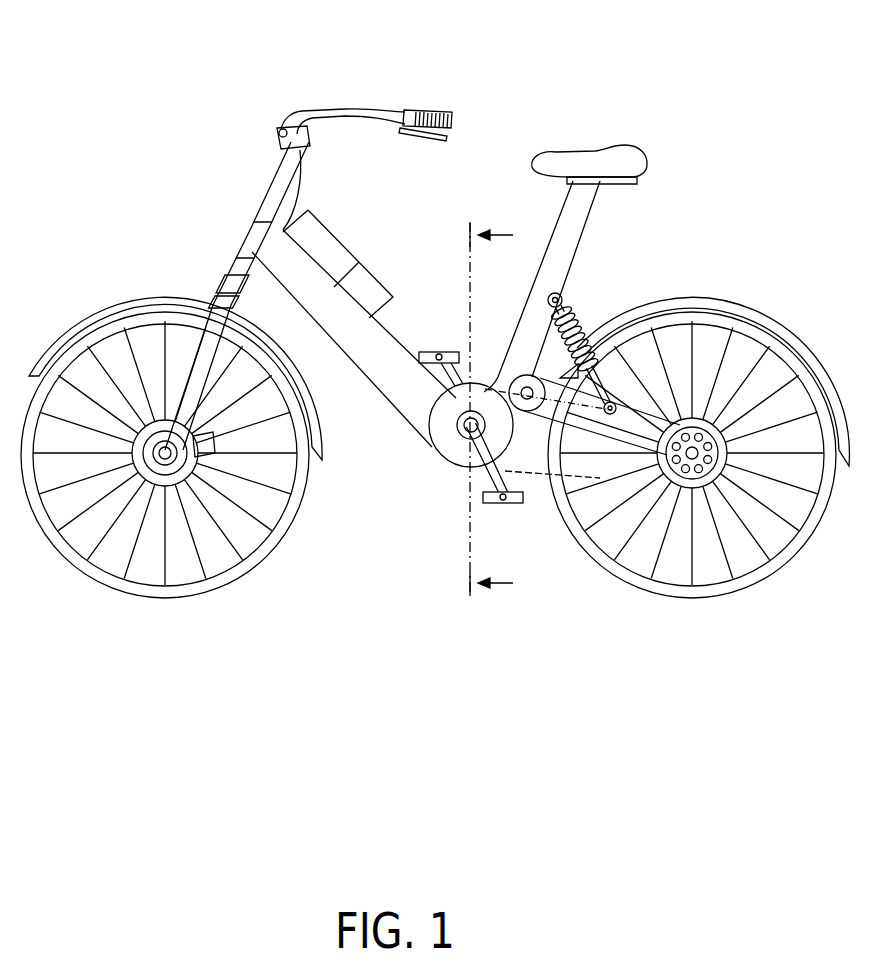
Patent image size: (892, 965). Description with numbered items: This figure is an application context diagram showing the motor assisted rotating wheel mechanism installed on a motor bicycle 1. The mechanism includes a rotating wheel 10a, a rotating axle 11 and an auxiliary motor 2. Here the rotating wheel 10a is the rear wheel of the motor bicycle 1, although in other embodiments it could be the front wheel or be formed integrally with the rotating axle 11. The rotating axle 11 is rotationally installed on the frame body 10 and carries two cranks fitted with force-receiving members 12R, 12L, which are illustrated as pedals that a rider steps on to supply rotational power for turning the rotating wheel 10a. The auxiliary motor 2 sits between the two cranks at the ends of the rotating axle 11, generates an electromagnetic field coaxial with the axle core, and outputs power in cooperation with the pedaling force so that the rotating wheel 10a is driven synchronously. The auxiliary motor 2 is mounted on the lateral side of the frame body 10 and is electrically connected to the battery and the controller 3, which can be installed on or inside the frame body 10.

The motor bicycle 1 is at (682, 76).
The auxiliary motor 2 is at (445, 452).
The battery and controller 3 is at (332, 243).
The frame body 10 is at (270, 272).
The rotating wheel 10a is at (752, 343).
The rotating axle 11 is at (467, 432).
The force-receiving member 12L is at (438, 350).
The force-receiving member 12R is at (515, 503).